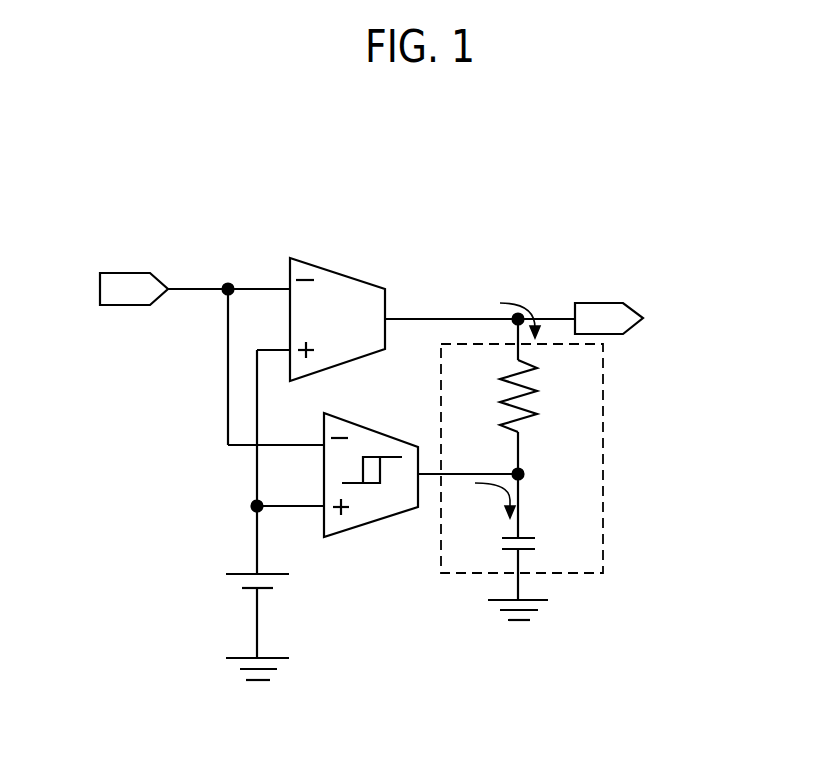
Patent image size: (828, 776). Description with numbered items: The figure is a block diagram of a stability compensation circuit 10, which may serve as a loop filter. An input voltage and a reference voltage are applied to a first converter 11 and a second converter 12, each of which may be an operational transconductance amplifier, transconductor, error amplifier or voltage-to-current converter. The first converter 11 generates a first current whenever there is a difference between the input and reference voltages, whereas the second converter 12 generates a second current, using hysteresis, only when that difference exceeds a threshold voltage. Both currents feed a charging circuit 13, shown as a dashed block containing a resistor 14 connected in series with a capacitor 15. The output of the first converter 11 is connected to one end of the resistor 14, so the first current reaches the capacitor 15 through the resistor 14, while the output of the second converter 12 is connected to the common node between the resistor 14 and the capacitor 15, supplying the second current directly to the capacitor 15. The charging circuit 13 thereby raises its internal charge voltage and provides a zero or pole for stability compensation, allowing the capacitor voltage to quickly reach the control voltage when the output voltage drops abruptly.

The stability compensation circuit 10 is at (622, 190).
The first converter 11 is at (353, 277).
The second converter 12 is at (389, 437).
The charging circuit 13 is at (605, 430).
The resistor 14 is at (505, 397).
The capacitor 15 is at (502, 543).